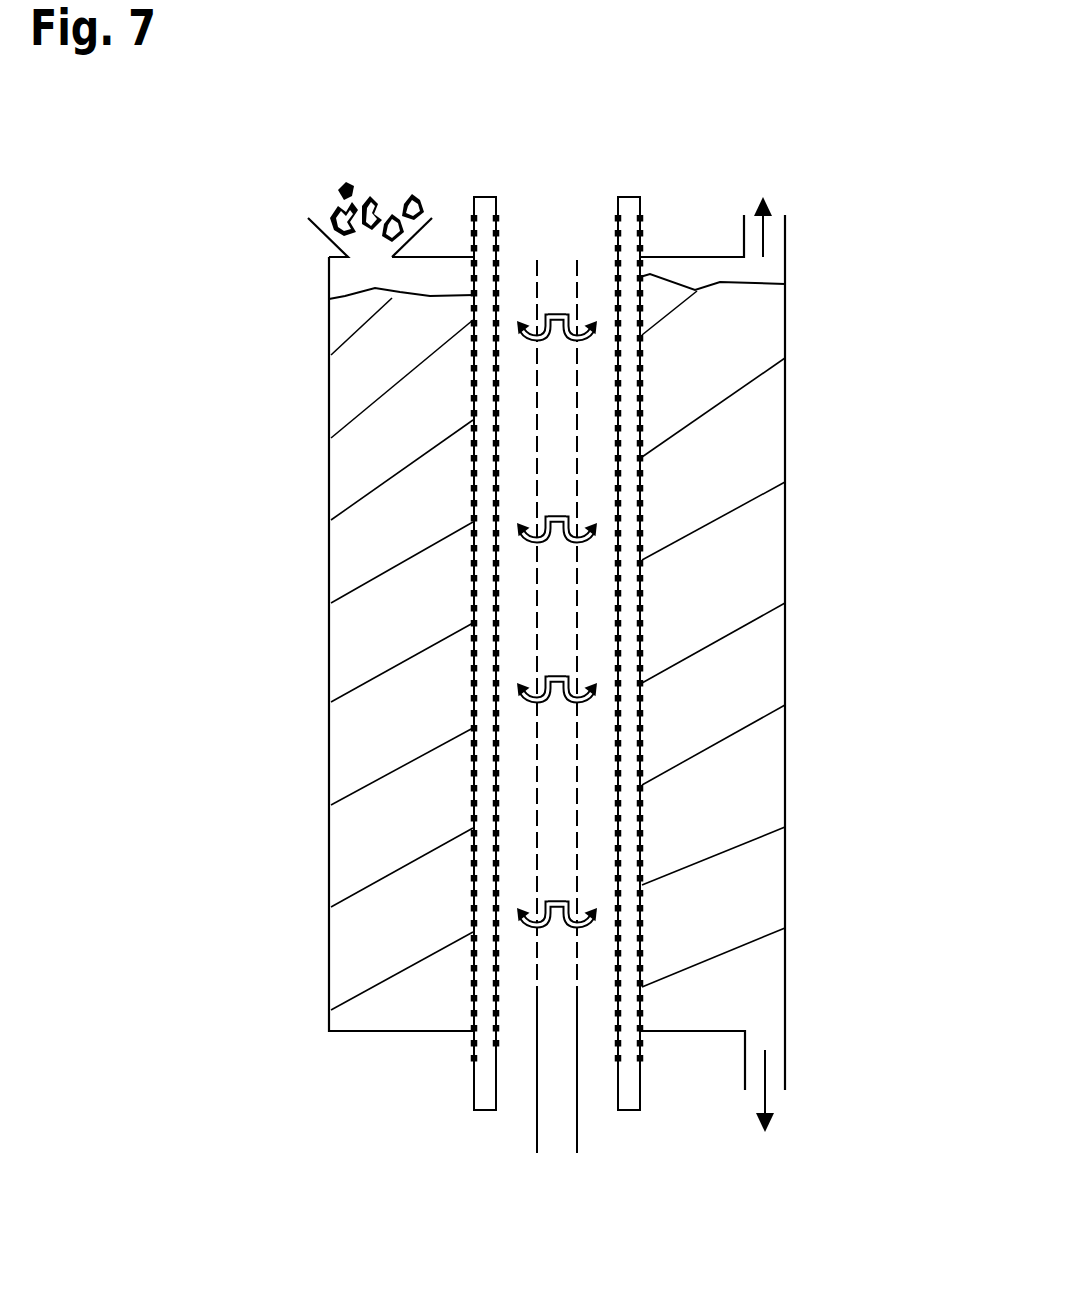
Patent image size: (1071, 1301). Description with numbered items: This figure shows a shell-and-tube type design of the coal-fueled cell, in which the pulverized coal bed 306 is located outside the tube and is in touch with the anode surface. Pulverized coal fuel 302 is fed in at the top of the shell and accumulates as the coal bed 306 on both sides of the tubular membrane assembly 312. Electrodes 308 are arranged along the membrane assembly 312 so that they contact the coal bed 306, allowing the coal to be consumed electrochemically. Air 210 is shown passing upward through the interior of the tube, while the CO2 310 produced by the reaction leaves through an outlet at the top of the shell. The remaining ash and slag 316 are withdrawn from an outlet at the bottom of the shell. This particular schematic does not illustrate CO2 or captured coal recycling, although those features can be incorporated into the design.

The coal fuel 302 is at (390, 200).
The CO2 310 is at (805, 209).
The coal bed 306 is at (733, 469).
The electrodes 308 is at (660, 730).
The membrane assembly 312 is at (462, 1095).
The air 210 is at (558, 1127).
The ash and slag 316 is at (772, 1125).